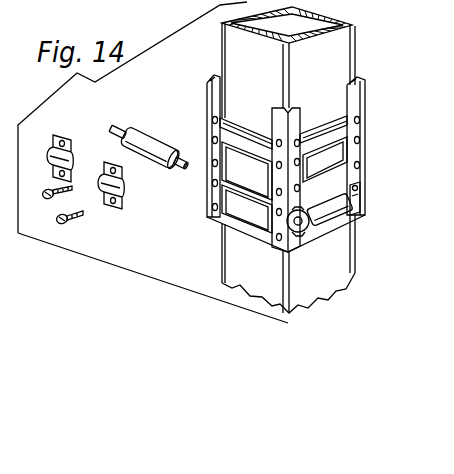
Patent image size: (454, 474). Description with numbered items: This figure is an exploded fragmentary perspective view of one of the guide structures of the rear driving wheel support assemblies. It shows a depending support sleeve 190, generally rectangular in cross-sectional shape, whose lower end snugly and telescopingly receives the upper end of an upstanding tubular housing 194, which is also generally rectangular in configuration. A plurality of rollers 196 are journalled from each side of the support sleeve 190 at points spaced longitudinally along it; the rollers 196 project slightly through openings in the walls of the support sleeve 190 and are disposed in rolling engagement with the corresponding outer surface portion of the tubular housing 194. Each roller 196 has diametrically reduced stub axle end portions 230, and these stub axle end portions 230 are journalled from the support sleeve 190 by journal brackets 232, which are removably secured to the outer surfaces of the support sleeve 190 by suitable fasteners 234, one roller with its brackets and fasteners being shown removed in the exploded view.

The support sleeve 190 is at (355, 213).
The tubular housing 194 is at (323, 62).
The roller 196 is at (155, 147).
The stub axle end portion 230 is at (118, 126).
The journal bracket 232 is at (122, 189).
The fastener 234 is at (68, 233).